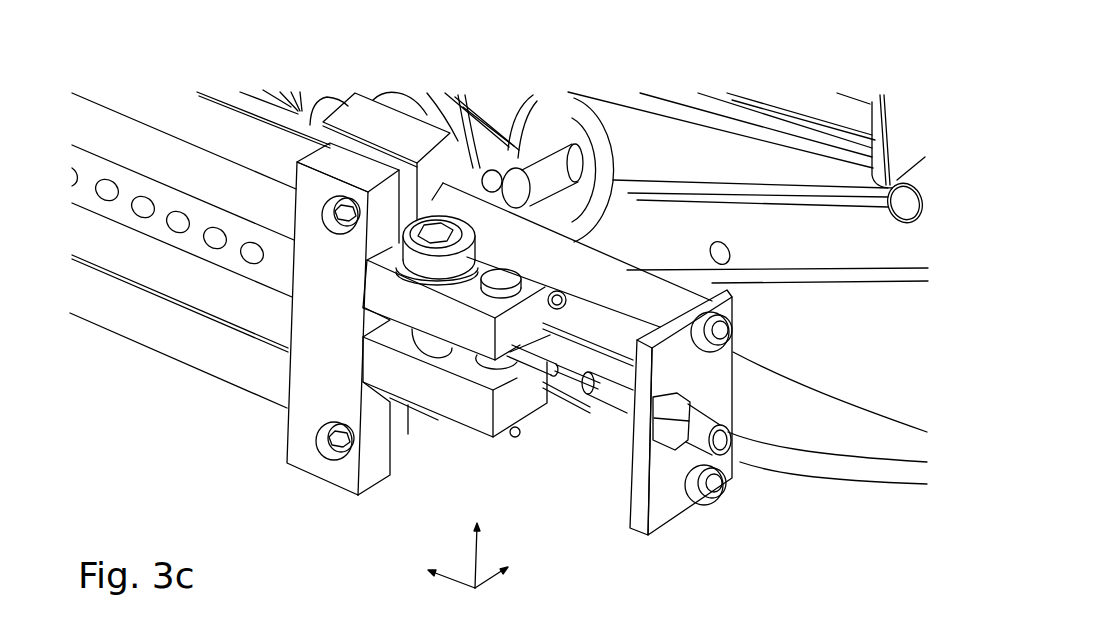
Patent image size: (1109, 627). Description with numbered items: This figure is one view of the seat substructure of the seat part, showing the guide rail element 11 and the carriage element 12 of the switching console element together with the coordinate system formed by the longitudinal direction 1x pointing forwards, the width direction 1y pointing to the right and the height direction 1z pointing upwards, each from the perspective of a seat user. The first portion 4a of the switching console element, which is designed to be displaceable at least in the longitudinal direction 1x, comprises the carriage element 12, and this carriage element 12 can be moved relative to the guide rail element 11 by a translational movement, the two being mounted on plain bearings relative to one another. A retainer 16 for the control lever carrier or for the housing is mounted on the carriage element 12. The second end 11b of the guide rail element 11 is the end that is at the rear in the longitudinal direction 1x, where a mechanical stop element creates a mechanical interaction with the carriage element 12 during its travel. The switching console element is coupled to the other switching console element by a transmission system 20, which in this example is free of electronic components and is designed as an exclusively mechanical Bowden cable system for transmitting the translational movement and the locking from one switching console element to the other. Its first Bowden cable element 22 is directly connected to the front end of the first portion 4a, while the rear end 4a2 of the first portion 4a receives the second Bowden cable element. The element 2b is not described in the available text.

The carriage element 12 is at (168, 368).
The rear frame structure 2b is at (863, 247).
The retainer 16 is at (311, 498).
The first portion of the switching console element 4a is at (238, 447).
The guide rail element 11 is at (617, 273).
The second end of the guide rail element 11b is at (705, 283).
The rear end of the first portion 4a2 is at (703, 515).
The first Bowden cable element 22 is at (790, 460).
The transmission system 20 is at (884, 505).
The longitudinal direction 1x is at (450, 592).
The width direction 1y is at (502, 586).
The height direction 1z is at (455, 555).